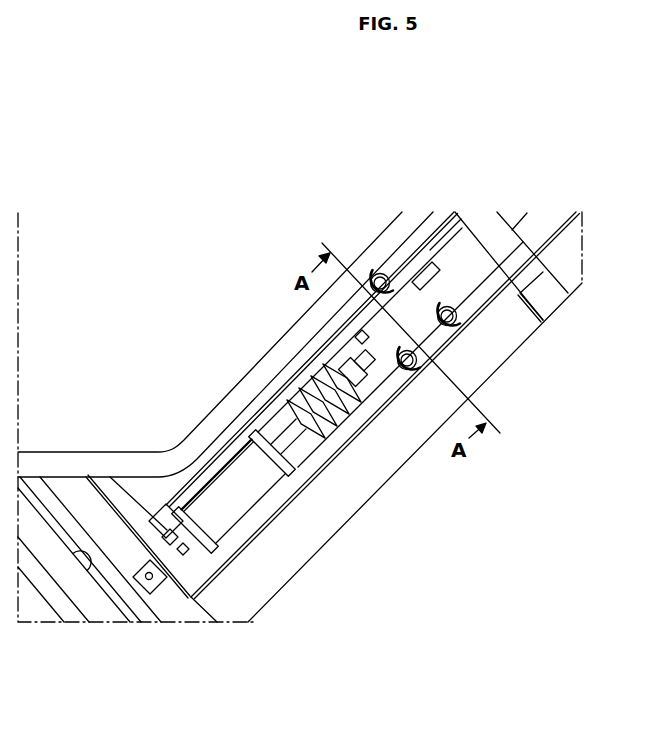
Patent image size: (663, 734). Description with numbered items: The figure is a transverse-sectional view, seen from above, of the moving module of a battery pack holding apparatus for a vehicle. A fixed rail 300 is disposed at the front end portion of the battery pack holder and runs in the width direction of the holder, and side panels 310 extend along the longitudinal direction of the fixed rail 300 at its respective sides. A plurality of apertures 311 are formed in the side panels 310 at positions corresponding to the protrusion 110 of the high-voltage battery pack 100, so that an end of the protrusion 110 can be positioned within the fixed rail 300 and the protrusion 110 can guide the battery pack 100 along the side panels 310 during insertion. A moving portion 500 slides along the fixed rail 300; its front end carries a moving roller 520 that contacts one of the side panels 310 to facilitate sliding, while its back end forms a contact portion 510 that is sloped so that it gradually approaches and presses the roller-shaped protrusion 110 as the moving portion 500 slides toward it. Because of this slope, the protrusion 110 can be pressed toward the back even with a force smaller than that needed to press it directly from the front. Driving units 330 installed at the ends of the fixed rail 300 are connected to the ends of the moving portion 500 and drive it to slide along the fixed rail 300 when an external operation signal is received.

The high-voltage battery pack 100 is at (174, 236).
The protrusion 110 is at (375, 266).
The fixed rail 300 is at (368, 433).
The side panels 310 is at (387, 407).
The apertures 311 is at (438, 343).
The driving units 330 is at (240, 493).
The moving portion 500 is at (404, 280).
The contact portion 510 is at (266, 295).
The moving roller 520 is at (455, 320).